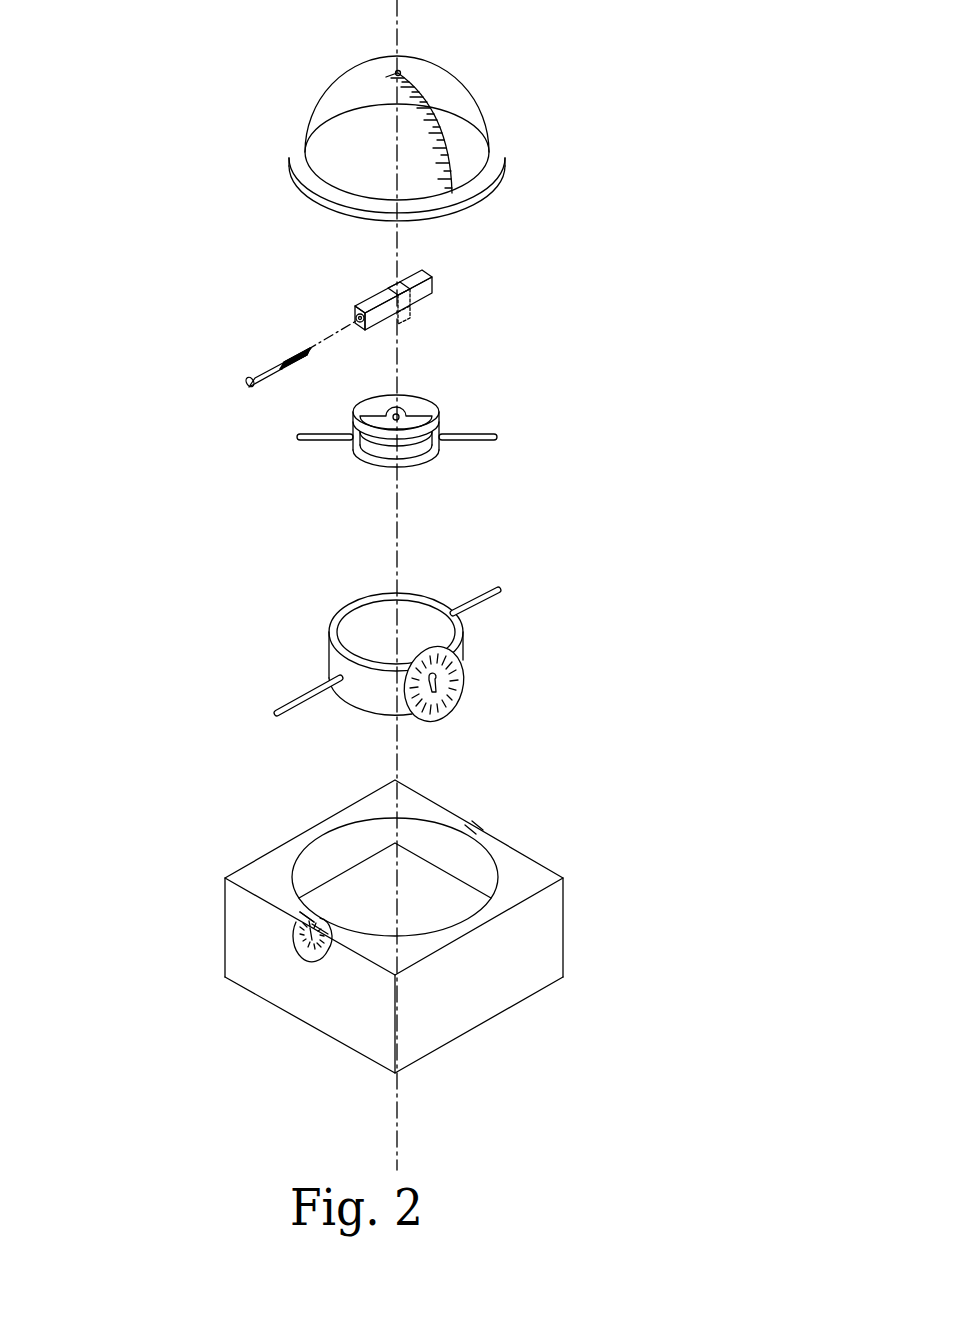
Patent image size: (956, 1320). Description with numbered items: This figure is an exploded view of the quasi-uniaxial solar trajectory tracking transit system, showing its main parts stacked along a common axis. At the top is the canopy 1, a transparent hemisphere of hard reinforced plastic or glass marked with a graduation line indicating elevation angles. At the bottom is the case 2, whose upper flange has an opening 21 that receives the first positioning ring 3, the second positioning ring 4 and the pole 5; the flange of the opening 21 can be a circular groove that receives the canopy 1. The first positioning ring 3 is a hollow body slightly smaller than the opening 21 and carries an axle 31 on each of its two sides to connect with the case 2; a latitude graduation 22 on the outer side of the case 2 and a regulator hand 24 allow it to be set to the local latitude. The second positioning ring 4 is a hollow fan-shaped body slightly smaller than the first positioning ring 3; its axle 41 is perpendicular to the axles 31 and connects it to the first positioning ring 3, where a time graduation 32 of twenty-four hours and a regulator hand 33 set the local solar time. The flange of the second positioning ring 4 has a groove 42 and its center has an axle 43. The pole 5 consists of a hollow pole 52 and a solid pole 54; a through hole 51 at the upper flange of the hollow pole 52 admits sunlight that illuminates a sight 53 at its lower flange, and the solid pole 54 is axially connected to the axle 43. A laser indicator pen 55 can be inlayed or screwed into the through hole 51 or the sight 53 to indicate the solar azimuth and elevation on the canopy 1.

The canopy 1 is at (515, 124).
The case 2 is at (422, 972).
The opening 21 is at (470, 870).
The latitude graduation 22 is at (296, 937).
The regulator hand 24 is at (312, 945).
The first positioning ring 3 is at (433, 646).
The axle 31 is at (497, 588).
The time graduation 32 is at (462, 690).
The regulator hand 33 is at (437, 694).
The second positioning ring 4 is at (437, 428).
The axle 41 is at (465, 439).
The groove 42 is at (377, 453).
The axle 43 is at (399, 415).
The pole 5 is at (374, 260).
The through hole 51 is at (357, 319).
The hollow pole 52 is at (356, 306).
The sight 53 is at (412, 307).
The solid pole 54 is at (423, 273).
The laser indicator pen 55 is at (247, 382).